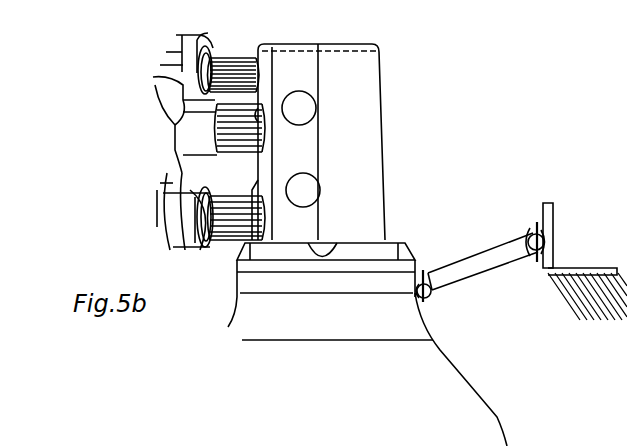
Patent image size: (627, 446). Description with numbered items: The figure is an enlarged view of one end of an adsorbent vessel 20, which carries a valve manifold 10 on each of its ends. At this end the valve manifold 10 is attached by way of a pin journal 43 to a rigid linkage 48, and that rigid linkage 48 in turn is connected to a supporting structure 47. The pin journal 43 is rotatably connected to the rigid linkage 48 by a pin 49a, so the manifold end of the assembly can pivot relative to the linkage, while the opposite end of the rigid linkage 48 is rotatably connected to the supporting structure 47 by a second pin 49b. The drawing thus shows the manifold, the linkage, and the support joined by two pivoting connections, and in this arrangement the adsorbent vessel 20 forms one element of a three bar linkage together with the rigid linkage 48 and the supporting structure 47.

The valve manifold 10 is at (387, 107).
The adsorbent vessel 20 is at (500, 402).
The pin journal 43 is at (432, 298).
The supporting structure 47 is at (552, 202).
The rigid linkage 48 is at (478, 253).
The pin 49a is at (429, 273).
The second pivot 49b is at (532, 237).